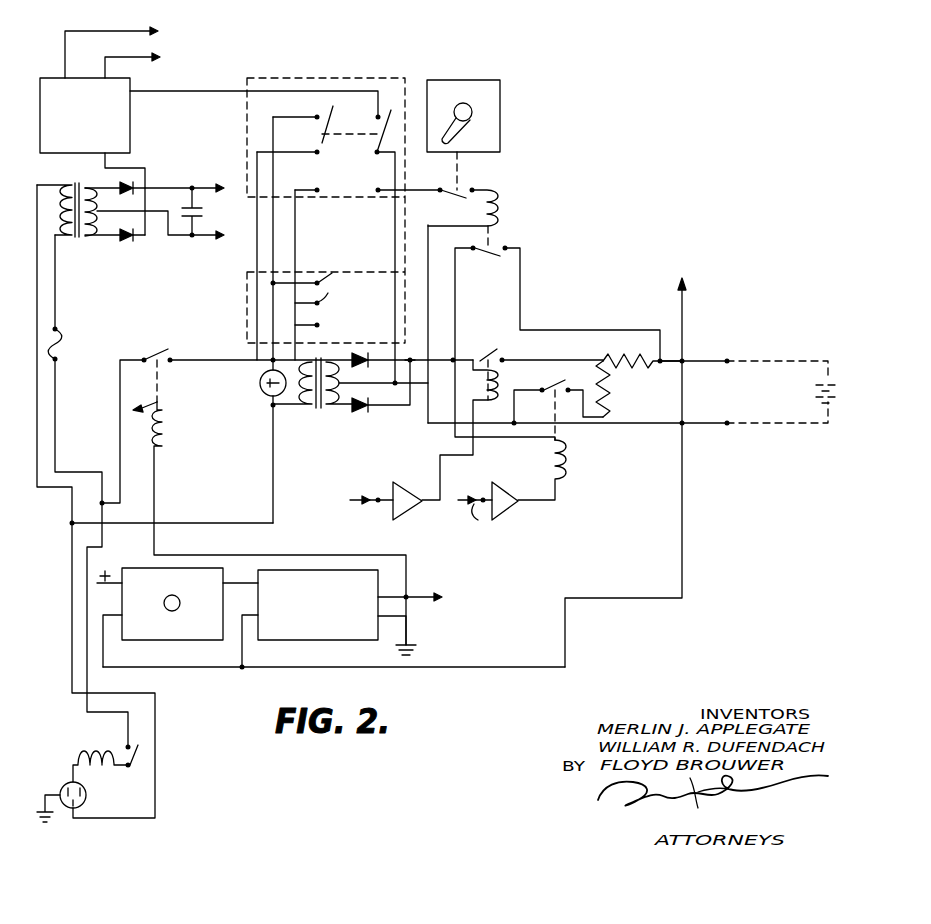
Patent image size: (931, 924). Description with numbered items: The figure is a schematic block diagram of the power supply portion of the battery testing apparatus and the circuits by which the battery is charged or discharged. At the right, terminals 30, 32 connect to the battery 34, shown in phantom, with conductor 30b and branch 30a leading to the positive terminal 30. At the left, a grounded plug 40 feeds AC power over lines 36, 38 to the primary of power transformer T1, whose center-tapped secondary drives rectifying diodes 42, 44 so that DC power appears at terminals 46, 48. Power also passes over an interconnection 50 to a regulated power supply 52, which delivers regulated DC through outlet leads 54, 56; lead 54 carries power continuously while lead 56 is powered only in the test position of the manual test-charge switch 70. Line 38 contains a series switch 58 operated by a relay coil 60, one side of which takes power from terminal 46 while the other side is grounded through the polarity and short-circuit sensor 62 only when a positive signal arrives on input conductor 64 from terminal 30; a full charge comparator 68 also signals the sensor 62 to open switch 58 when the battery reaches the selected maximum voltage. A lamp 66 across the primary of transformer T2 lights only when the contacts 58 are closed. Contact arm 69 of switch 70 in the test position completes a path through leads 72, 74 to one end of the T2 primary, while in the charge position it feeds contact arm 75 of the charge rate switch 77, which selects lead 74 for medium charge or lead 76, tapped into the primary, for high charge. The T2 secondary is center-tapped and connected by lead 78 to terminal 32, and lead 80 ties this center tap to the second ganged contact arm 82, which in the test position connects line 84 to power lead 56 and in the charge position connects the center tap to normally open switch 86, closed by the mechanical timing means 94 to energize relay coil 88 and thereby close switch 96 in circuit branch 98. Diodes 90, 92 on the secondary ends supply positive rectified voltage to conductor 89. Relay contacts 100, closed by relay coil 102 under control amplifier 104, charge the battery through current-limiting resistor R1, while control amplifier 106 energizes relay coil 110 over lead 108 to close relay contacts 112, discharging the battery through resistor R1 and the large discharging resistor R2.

The terminal 30 is at (740, 352).
The conductor branch to comparators 30a is at (684, 334).
The conductor 30b is at (663, 364).
The terminal 32 is at (736, 417).
The battery 34 is at (810, 390).
The line 36 is at (38, 313).
The line 38 is at (57, 400).
The grounded plug 40 is at (87, 796).
The rectifying diode 42 is at (128, 185).
The rectifying diode 44 is at (120, 236).
The terminal 46 is at (205, 187).
The terminal 48 is at (205, 234).
The interconnection 50 is at (148, 180).
The regulated power supply 52 is at (130, 116).
The outlet lead 54 is at (140, 31).
The outlet lead 56 is at (150, 57).
The series switch 58 is at (162, 355).
The relay coil 60 is at (170, 438).
The polarity and short-circuit sensor 62 is at (378, 550).
The input conductor 64 is at (486, 652).
The lamp 66 is at (267, 403).
The full charge comparator 68 is at (213, 610).
The movable contact arm 69 is at (317, 149).
The manual test-charge switch 70 is at (238, 78).
The lead 72 is at (295, 107).
The lead 74 is at (283, 324).
The movable contact arm 75 is at (325, 309).
The lead 76 is at (284, 325).
The charge rate switch 77 is at (408, 268).
The lead 78 is at (422, 394).
The lead 80 is at (405, 307).
The movable contact arm 82 is at (391, 122).
The line 84 is at (378, 93).
The normally open switch 86 is at (464, 195).
The relay coil 88 is at (499, 214).
The conductor 89 is at (411, 360).
The rectifying diode 90 is at (368, 352).
The rectifying diode 92 is at (359, 410).
The mechanical timing means 94 is at (500, 140).
The normally open switch 96 is at (497, 250).
The circuit branch 98 is at (670, 315).
The relay contacts 100 is at (490, 360).
The relay coil 102 is at (510, 372).
The control amplifier 104 is at (426, 484).
The control amplifier 106 is at (520, 472).
The lead 108 is at (457, 388).
The relay coil 110 is at (571, 450).
The relay contacts 112 is at (568, 389).
The power transformer T1 is at (74, 178).
The transformer T2 is at (304, 413).
The current-limiting resistor R1 is at (643, 362).
The discharging resistor R2 is at (606, 390).